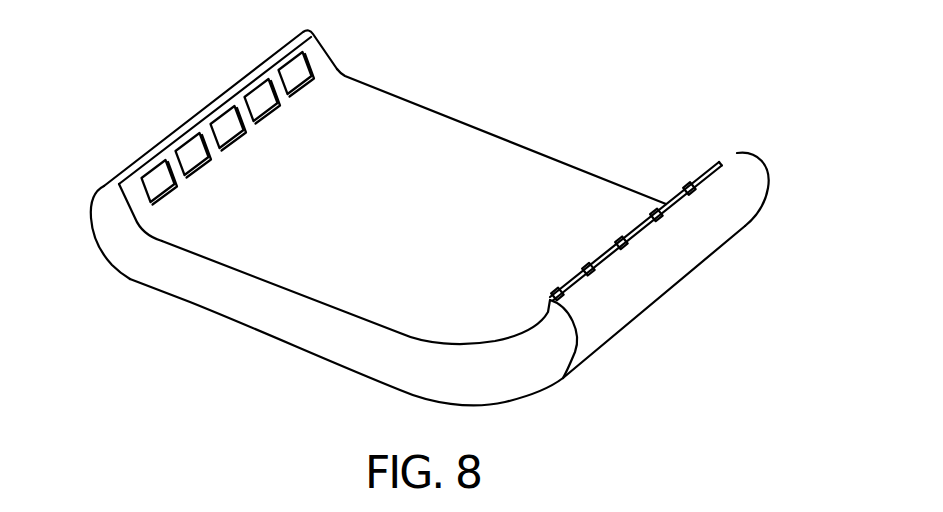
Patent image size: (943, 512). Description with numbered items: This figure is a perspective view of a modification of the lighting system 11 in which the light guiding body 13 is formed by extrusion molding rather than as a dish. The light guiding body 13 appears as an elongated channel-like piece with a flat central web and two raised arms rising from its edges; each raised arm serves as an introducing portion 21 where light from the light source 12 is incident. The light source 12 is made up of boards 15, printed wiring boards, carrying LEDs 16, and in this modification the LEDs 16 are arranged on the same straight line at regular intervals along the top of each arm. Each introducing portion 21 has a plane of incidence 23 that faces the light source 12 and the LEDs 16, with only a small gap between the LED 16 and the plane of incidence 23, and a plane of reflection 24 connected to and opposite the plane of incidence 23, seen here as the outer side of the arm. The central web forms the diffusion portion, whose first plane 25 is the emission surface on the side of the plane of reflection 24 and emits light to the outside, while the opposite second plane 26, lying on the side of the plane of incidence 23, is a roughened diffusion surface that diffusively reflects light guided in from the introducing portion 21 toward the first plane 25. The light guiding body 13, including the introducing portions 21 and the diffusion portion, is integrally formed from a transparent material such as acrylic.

The lighting system 11 is at (682, 74).
The light source 12 is at (335, 48).
The light guiding body 13 is at (528, 132).
The boards 15 is at (419, 176).
The LEDs 16 is at (297, 78).
The introducing portion 21 is at (105, 223).
The plane of incidence 23 is at (168, 157).
The plane of reflection 24 is at (96, 239).
The first plane 25 is at (291, 346).
The second plane 26 is at (402, 218).